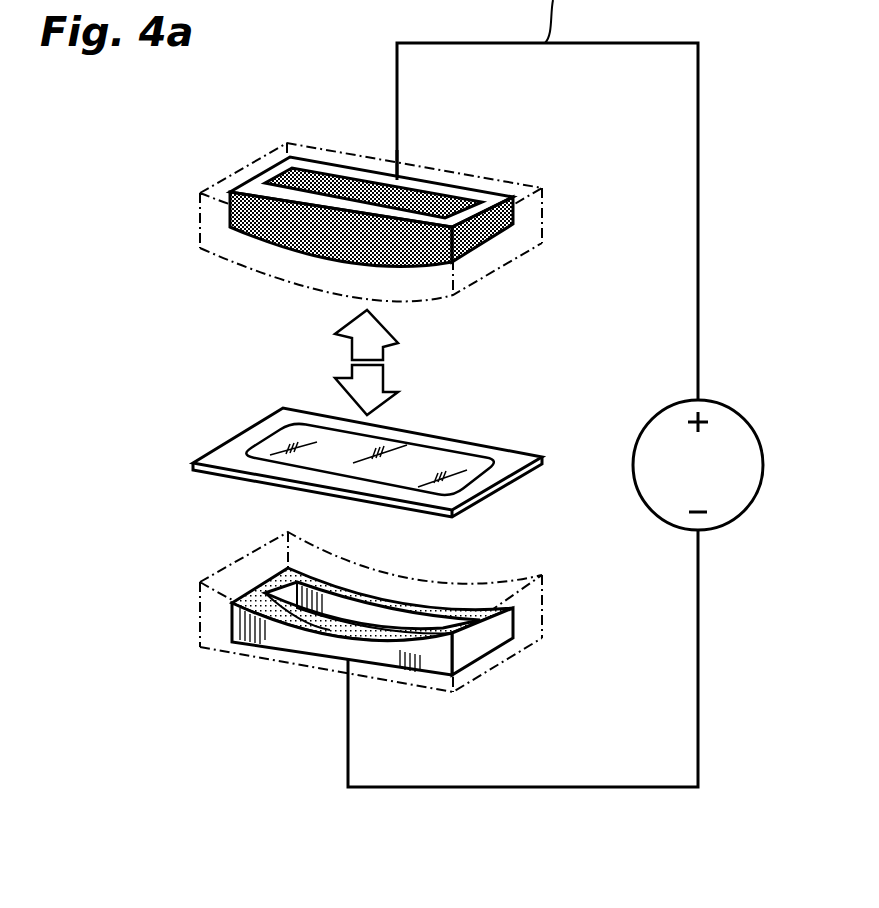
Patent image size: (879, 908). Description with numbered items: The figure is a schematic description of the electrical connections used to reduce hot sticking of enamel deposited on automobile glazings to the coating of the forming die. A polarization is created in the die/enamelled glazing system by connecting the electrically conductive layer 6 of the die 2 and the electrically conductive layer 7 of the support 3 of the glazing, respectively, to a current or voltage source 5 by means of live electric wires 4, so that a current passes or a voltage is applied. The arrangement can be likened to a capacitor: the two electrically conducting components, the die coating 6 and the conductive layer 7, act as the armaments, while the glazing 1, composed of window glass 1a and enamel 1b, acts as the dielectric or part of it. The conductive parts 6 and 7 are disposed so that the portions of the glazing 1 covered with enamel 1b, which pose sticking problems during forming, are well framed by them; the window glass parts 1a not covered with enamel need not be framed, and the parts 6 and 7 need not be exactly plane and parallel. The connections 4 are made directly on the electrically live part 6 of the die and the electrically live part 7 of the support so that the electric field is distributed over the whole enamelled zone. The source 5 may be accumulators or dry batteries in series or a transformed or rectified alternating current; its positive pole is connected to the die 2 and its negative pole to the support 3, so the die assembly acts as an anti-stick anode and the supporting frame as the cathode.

The glazing 1 is at (361, 427).
The window glass 1a is at (428, 462).
The enamel 1b is at (518, 463).
The die 2 is at (341, 195).
The support 3 is at (332, 621).
The live electric wires 4 is at (566, 789).
The current or voltage source 5 is at (668, 406).
The electrically conductive layer of the die 6 is at (275, 172).
The electrically conductive layer of the support 7 is at (251, 646).